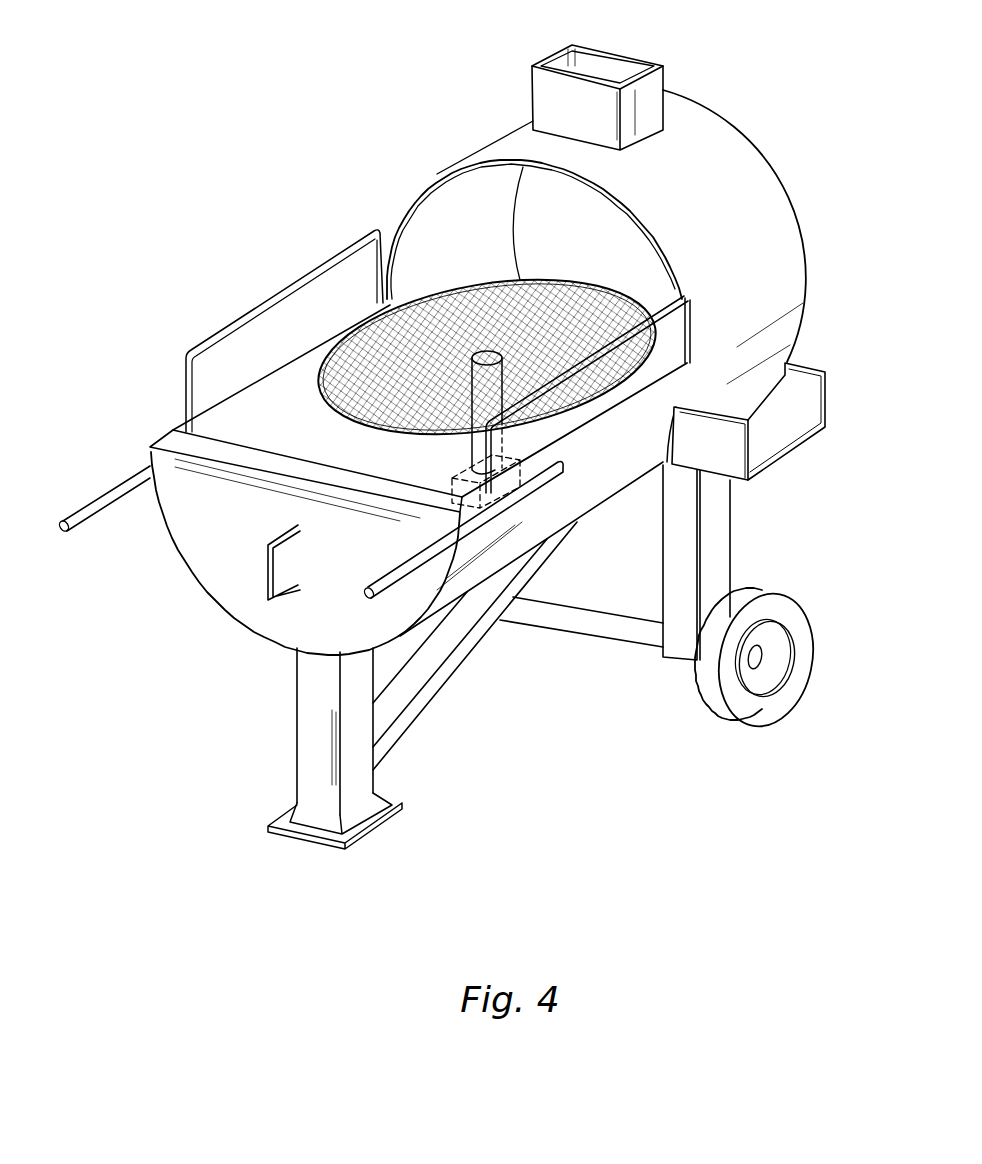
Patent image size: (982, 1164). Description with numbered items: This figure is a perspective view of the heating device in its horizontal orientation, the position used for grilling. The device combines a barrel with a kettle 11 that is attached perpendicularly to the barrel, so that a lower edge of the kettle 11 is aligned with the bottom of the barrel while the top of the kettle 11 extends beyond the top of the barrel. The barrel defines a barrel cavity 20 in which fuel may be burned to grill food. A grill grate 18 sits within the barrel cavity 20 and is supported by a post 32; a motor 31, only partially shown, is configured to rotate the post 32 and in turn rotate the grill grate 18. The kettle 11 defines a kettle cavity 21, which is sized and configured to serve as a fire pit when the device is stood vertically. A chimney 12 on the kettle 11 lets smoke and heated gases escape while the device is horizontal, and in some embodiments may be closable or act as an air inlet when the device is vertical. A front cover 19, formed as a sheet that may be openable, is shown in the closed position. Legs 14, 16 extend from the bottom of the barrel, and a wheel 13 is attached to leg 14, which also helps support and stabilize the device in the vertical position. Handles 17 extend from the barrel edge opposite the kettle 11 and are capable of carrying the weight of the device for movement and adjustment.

The kettle 11 is at (768, 163).
The chimney 12 is at (653, 100).
The wheel 13 is at (703, 693).
The leg 14 is at (730, 530).
The leg 16 is at (313, 785).
The handles 17 is at (104, 527).
The grill grate 18 is at (374, 368).
The front cover 19 is at (212, 572).
The barrel cavity 20 is at (279, 420).
The kettle cavity 21 is at (547, 207).
The motor 31 is at (507, 492).
The post 32 is at (468, 447).